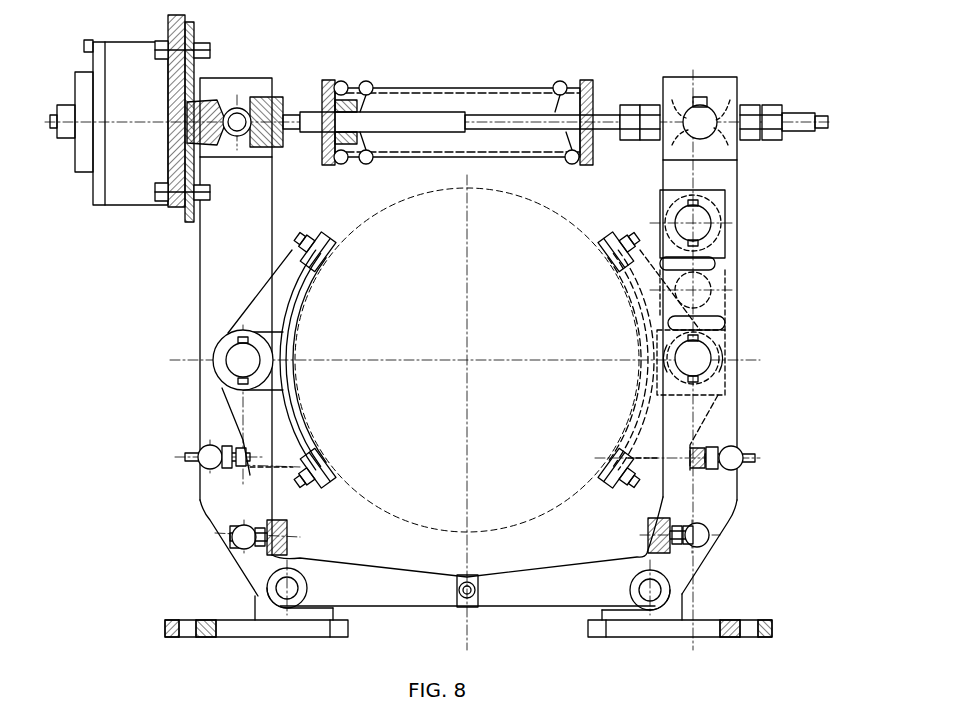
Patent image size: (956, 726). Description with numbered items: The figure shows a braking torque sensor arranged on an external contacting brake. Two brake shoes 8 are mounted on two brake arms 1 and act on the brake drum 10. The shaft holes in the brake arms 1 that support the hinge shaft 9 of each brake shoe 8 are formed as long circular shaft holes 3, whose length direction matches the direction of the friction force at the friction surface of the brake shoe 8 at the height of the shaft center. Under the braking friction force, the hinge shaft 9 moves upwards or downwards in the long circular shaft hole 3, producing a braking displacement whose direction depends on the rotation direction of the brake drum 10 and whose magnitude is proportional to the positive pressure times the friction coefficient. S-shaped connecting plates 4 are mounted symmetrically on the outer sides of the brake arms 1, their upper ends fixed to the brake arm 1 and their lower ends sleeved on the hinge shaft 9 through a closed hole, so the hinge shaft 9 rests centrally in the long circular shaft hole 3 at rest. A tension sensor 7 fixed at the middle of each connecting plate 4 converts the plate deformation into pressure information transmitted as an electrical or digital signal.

The brake arm 1 is at (718, 503).
The long circular shaft hole 3 is at (705, 375).
The connecting plate 4 is at (715, 248).
The tension sensor 7 is at (697, 288).
The brake shoe 8 is at (240, 408).
The hinge shaft of brake shoe 9 is at (232, 353).
The brake drum 10 is at (395, 490).